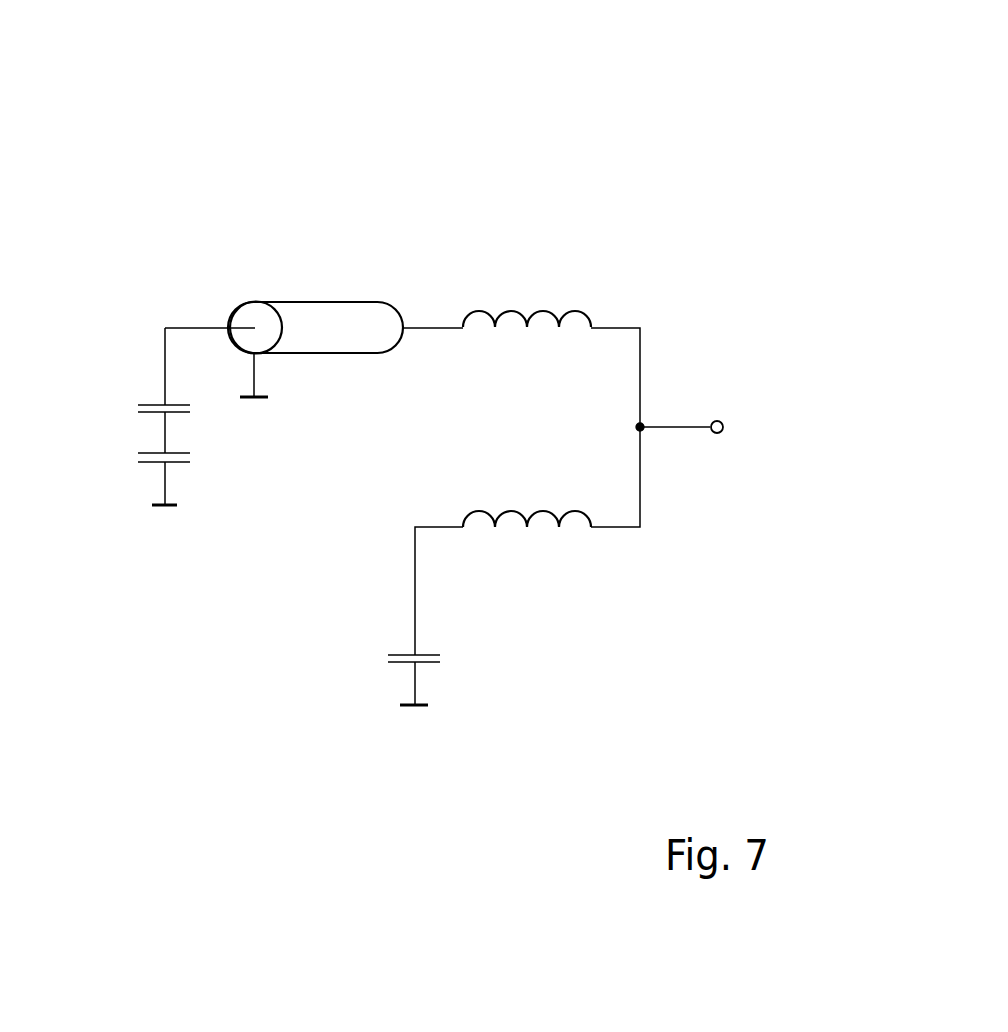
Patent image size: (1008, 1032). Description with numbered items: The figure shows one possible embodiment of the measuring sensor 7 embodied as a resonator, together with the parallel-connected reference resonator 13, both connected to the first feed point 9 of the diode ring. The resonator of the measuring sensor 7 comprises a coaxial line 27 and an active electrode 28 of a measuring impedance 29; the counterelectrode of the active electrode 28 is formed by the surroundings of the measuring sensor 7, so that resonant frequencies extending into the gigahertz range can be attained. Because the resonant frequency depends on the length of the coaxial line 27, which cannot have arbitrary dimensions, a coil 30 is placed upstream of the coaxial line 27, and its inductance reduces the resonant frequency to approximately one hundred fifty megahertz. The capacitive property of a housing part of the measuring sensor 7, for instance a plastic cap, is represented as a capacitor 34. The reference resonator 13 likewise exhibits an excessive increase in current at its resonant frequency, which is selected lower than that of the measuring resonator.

The measuring sensor 7 is at (217, 177).
The coaxial line 27 is at (340, 308).
The coil 30 is at (542, 310).
The first feed point 9 is at (717, 420).
The capacitor 34 is at (145, 402).
The active electrode 28 is at (182, 462).
The measuring impedance 29 is at (138, 492).
The reference resonator 13 is at (503, 630).